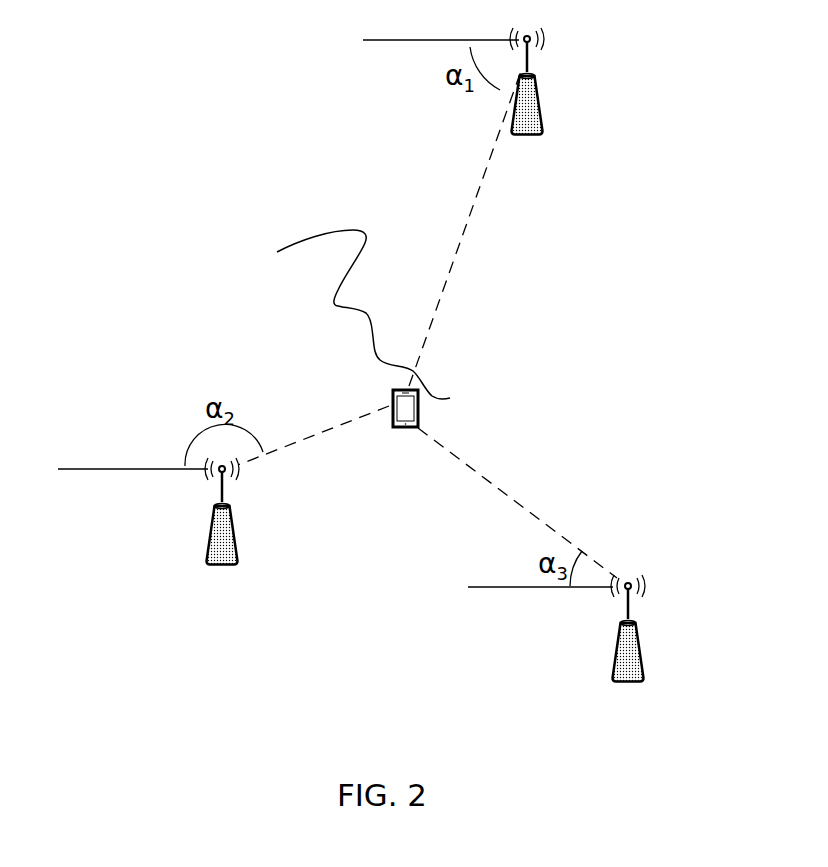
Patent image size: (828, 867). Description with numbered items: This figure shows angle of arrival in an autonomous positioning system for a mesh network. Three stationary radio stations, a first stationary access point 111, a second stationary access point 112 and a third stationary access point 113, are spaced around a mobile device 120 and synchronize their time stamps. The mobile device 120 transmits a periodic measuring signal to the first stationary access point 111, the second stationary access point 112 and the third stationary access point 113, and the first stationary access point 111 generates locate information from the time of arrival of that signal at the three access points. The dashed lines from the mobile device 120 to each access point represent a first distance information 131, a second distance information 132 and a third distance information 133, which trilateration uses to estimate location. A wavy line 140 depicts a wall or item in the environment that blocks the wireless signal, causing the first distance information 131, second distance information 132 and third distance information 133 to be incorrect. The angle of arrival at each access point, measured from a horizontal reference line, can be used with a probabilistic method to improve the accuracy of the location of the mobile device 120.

The first stationary access point 111 is at (487, 96).
The second stationary access point 112 is at (151, 536).
The third stationary access point 113 is at (556, 633).
The mobile device 120 is at (440, 414).
The first distance information 131 is at (466, 228).
The second distance information 132 is at (313, 444).
The third distance information 133 is at (517, 503).
The obstacle / boundary 140 is at (363, 294).